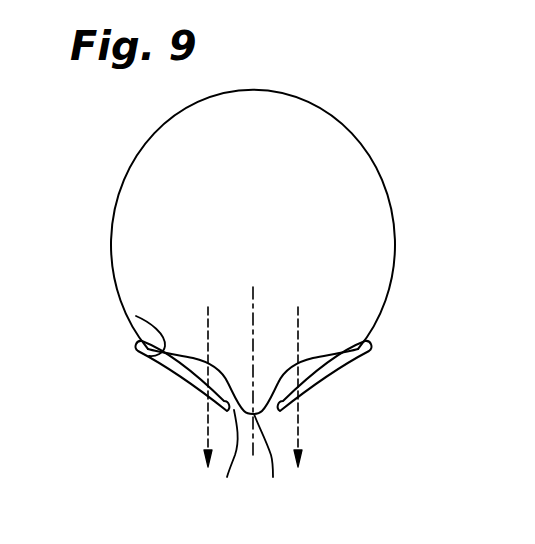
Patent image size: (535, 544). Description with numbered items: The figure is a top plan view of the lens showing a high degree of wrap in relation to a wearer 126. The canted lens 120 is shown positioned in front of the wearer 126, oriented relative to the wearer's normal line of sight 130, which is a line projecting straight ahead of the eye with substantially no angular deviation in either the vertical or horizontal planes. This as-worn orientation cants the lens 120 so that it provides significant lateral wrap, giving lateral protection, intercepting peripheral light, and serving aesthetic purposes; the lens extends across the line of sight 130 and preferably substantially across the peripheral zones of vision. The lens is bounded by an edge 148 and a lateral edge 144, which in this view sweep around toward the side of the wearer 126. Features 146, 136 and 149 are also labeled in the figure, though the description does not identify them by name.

The wearer 126 is at (307, 99).
The canted lens 120 is at (165, 369).
The bead 146 is at (136, 316).
The lateral edge 144 is at (137, 346).
The outlet stream walls 136 is at (187, 398).
The normal line of sight 130 is at (207, 428).
The edge 148 is at (242, 408).
The central axis 149 is at (274, 398).